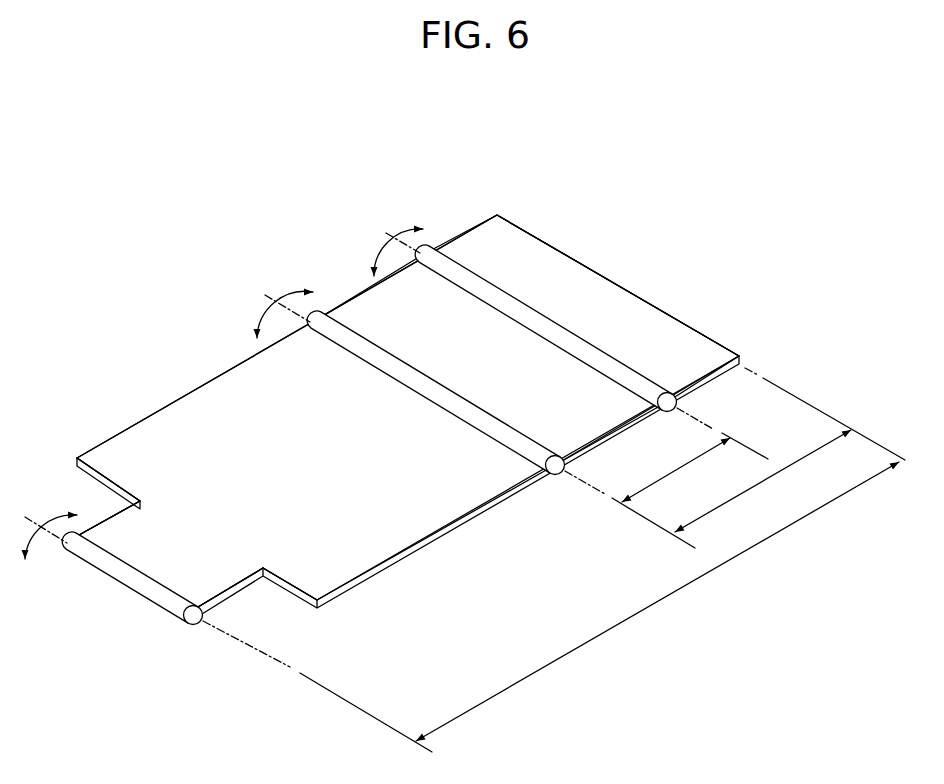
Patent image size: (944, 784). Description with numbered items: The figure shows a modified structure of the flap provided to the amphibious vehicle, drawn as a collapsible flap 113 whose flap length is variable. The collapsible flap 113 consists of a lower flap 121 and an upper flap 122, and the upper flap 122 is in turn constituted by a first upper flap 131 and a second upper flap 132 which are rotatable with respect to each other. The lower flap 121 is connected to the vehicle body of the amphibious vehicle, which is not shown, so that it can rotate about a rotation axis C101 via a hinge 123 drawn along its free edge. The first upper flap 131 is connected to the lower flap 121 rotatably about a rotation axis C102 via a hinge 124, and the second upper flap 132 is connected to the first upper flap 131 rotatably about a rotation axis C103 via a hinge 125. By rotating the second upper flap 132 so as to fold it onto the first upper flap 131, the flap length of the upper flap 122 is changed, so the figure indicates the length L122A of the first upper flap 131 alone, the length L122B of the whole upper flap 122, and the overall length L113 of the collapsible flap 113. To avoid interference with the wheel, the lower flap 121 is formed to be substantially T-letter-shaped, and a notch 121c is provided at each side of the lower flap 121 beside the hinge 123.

The collapsible flap 113 is at (650, 199).
The lower flap 121 is at (142, 420).
The notch 121c is at (82, 477).
The upper flap 122 is at (482, 166).
The first upper flap 131 is at (343, 302).
The second upper flap 132 is at (453, 242).
The hinge 123 is at (110, 568).
The hinge 124 is at (367, 362).
The hinge 125 is at (523, 317).
The rotation axis C101 is at (50, 523).
The rotation axis C102 is at (284, 301).
The rotation axis C103 is at (397, 237).
The length of first sub-plate L122A is at (666, 478).
The length of second plate portion L122B is at (790, 450).
The total length of hinge member L113 is at (551, 607).